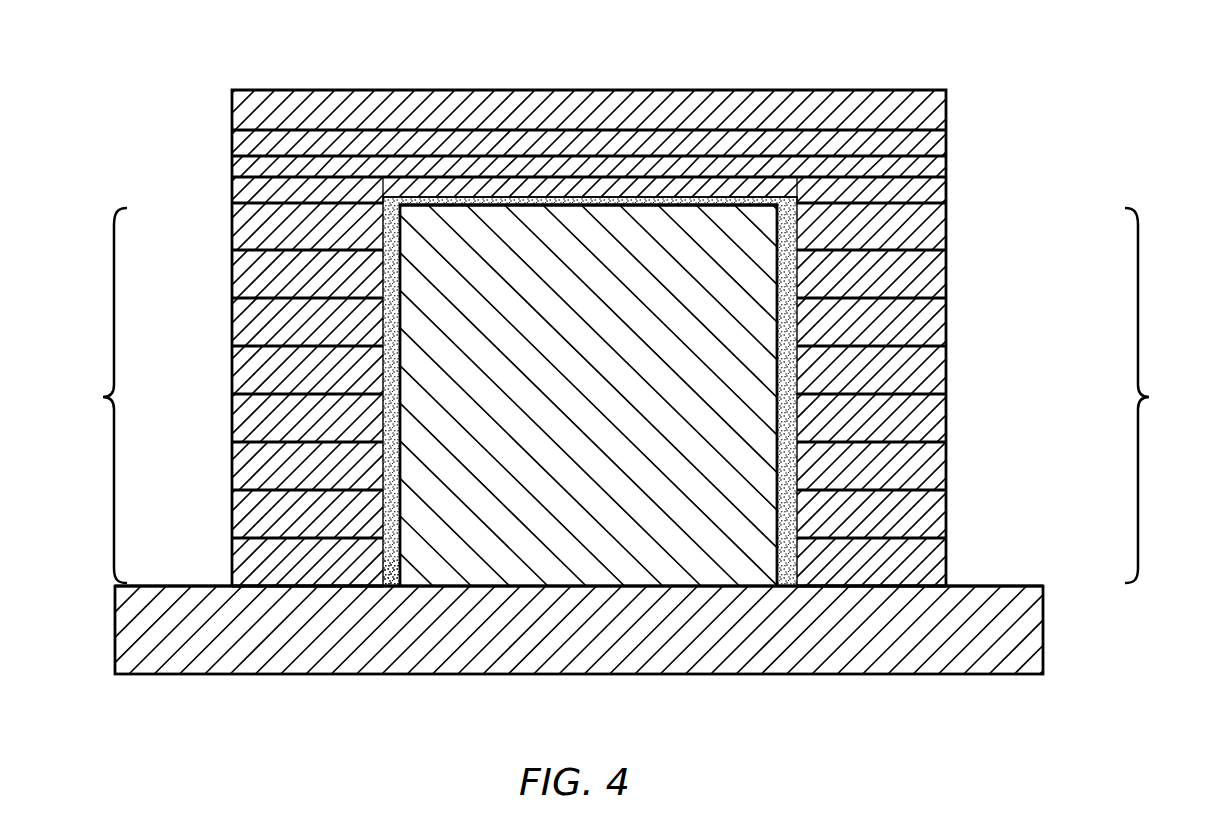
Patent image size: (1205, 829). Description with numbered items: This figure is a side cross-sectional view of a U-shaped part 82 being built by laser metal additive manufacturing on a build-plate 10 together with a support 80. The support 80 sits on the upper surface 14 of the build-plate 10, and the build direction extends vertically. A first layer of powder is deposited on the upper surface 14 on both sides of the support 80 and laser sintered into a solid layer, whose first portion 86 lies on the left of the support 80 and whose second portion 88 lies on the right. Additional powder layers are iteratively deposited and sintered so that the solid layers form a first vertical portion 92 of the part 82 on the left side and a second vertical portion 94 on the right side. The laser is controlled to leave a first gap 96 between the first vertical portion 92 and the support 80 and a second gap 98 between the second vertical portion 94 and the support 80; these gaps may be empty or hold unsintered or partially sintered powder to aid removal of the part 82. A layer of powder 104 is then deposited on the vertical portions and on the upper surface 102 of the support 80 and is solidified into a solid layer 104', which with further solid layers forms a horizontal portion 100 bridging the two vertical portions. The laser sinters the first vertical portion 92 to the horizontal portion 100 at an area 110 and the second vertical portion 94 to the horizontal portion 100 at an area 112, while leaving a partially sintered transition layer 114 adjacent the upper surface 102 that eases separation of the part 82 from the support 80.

The build-plate 10 is at (973, 680).
The upper surface 14 is at (1014, 588).
The support 80 is at (667, 535).
The part 82 is at (948, 242).
The first portion 86 is at (242, 560).
The second portion 88 is at (940, 570).
The first vertical portion 92 is at (92, 395).
The second vertical portion 94 is at (1152, 395).
The first gap 96 is at (389, 584).
The second gap 98 is at (783, 586).
The horizontal portion 100 is at (948, 140).
The upper surface 102 is at (740, 200).
The layer of powder 104 is at (935, 180).
The solid layer 104' is at (266, 191).
The area 110 is at (278, 205).
The area 112 is at (927, 203).
The transition layer 114 is at (610, 200).